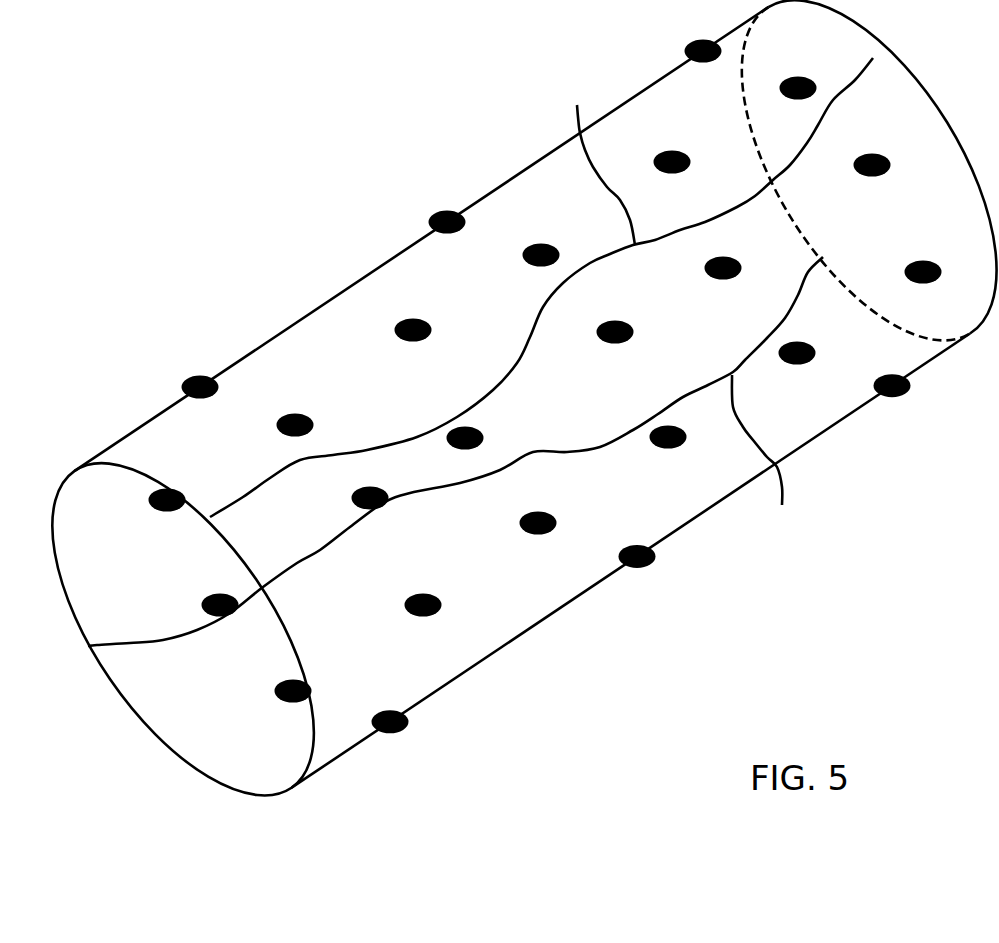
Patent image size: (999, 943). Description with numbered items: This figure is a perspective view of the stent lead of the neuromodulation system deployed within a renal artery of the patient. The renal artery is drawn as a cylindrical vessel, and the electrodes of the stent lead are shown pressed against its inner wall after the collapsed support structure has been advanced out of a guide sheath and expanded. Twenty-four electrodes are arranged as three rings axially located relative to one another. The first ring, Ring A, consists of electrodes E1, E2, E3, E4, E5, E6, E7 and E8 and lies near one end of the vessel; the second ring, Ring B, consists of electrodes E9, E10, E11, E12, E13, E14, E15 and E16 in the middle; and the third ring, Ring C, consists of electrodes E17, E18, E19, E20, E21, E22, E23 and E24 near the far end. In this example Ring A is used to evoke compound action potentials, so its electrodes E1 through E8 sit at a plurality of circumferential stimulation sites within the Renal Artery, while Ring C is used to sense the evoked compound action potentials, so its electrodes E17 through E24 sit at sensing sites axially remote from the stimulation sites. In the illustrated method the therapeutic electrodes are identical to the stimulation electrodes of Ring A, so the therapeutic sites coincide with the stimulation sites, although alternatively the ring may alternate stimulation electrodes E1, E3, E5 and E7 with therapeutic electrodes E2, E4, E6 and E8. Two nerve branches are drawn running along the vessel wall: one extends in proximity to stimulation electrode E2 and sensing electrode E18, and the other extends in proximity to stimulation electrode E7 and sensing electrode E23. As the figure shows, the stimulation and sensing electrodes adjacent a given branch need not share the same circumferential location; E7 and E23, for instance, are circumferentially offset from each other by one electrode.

The electrode E1 is at (200, 402).
The electrode E2 is at (282, 433).
The electrode E3 is at (358, 508).
The electrode E4 is at (407, 610).
The electrode E5 is at (388, 705).
The electrode E6 is at (304, 679).
The electrode E7 is at (233, 599).
The electrode E8 is at (181, 496).
The electrode E9 is at (447, 238).
The electrode E10 is at (530, 269).
The electrode E11 is at (599, 347).
The electrode E12 is at (648, 447).
The electrode E13 is at (635, 544).
The electrode E14 is at (559, 518).
The electrode E15 is at (485, 433).
The electrode E16 is at (434, 330).
The electrode E17 is at (708, 66).
The electrode E18 is at (787, 103).
The electrode E19 is at (856, 180).
The electrode E20 is at (908, 284).
The electrode E21 is at (890, 370).
The electrode E22 is at (814, 340).
The electrode E23 is at (744, 261).
The electrode E24 is at (692, 161).
The first electrode ring Ring A is at (392, 742).
The second electrode ring Ring B is at (643, 573).
The third electrode ring Ring C is at (899, 405).
The renal artery Renal Artery is at (90, 462).